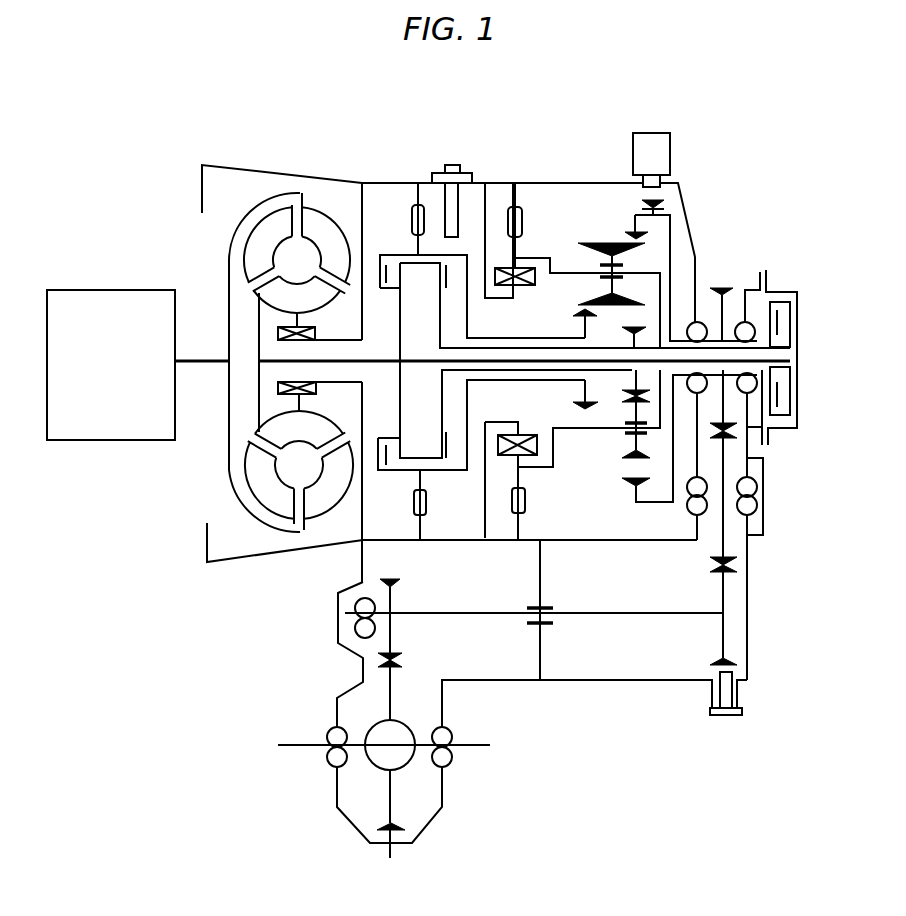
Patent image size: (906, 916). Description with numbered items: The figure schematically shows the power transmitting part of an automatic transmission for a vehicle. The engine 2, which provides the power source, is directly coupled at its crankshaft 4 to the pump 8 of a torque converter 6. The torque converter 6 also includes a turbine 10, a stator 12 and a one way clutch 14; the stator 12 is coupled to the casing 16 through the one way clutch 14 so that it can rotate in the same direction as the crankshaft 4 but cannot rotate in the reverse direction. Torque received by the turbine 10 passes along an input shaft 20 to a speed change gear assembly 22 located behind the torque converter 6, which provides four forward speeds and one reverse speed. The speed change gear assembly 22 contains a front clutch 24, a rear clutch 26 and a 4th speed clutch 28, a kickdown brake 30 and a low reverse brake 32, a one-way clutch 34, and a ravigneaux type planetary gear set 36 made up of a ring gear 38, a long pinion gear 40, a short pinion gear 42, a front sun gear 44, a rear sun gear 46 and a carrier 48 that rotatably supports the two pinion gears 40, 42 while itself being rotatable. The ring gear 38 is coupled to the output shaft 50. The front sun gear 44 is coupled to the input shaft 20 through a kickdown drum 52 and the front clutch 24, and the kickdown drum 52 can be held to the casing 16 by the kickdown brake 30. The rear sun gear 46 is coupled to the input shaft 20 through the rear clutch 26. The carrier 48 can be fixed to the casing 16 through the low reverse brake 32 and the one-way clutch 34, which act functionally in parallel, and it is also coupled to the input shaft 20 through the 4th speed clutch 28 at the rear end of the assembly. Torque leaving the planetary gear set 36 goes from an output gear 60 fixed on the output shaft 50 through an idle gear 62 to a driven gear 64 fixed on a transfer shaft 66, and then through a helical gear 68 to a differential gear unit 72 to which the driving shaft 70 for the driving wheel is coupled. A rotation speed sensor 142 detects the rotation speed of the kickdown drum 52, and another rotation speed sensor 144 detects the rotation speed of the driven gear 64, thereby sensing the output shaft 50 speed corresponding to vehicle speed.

The engine 2 is at (112, 389).
The crankshaft 4 is at (193, 367).
The torque converter 6 is at (251, 182).
The pump 8 is at (330, 213).
The turbine 10 is at (247, 252).
The stator 12 is at (287, 298).
The one way clutch 14 is at (277, 333).
The casing 16 is at (496, 182).
The input shaft 20 is at (260, 368).
The speed change gear assembly 22 is at (556, 176).
The front clutch 24 is at (389, 472).
The rear clutch 26 is at (437, 470).
The 4th speed clutch 28 is at (778, 317).
The kickdown brake 30 is at (428, 512).
The low reverse brake 32 is at (513, 512).
The one-way clutch 34 is at (538, 458).
The ravigneaux type planetary gear set 36 is at (566, 261).
The ring gear 38 is at (630, 234).
The long pinion gear 40 is at (602, 240).
The short pinion gear 42 is at (622, 456).
The front sun gear 44 is at (575, 405).
The rear sun gear 46 is at (624, 392).
The carrier 48 is at (663, 278).
The output shaft 50 is at (727, 340).
The kickdown drum 52 is at (430, 250).
The output gear 60 is at (723, 330).
The idle gear 62 is at (727, 437).
The driven gear 64 is at (727, 571).
The transfer shaft 66 is at (657, 612).
The helical gear 68 is at (393, 635).
The driving shaft 70 is at (291, 761).
The differential gear unit 72 is at (378, 762).
The rotation speed sensor 142 is at (451, 165).
The rotation speed sensor 144 is at (728, 716).